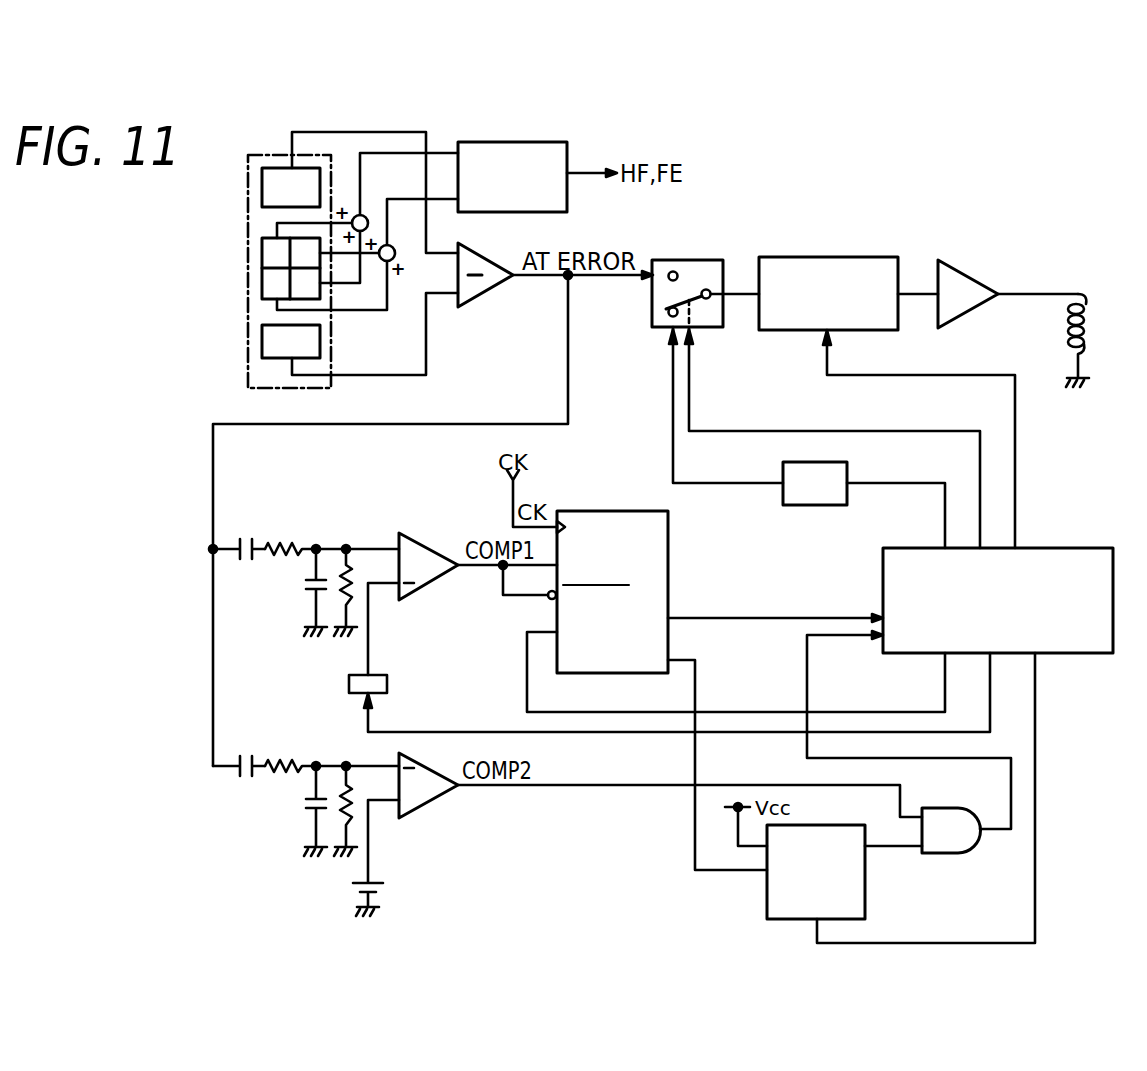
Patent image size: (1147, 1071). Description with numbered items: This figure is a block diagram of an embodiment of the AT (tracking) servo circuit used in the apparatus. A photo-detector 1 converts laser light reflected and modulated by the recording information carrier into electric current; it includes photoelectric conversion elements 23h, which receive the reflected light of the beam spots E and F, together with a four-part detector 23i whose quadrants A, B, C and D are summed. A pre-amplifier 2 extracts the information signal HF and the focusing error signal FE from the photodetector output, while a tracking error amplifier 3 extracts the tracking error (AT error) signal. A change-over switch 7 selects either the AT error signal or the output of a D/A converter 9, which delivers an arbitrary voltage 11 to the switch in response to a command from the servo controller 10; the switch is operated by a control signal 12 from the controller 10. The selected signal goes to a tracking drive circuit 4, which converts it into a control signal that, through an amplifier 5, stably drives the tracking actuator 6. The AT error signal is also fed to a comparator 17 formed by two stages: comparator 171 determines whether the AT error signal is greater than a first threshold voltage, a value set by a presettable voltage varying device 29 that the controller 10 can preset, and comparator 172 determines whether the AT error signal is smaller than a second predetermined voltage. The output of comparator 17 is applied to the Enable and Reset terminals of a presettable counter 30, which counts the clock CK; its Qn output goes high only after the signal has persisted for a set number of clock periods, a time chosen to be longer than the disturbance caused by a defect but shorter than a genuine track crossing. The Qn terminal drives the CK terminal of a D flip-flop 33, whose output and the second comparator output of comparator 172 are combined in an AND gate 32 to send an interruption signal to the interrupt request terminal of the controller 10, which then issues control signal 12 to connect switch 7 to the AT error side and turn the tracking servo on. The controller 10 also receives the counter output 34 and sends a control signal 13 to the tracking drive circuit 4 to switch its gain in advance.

The photo-detector 1 is at (256, 264).
The photoelectric conversion element 23h is at (262, 186).
The four-quadrant photodetector A B C D 23i is at (247, 236).
The pre-amplifier 2 is at (520, 142).
The tracking error amplifier 3 is at (492, 296).
The change-over switch 7 is at (693, 260).
The tracking drive circuit 4 is at (853, 257).
The amplifier 5 is at (964, 270).
The tracking actuator 6 is at (1086, 326).
The arbitrary voltage 11 is at (673, 369).
The control signal 12 is at (689, 369).
The control signal 13 is at (827, 364).
The D/A converter 9 is at (847, 477).
The servo controller 10 is at (1060, 548).
The comparator 17 is at (399, 685).
The comparator 171 is at (420, 538).
The comparator 172 is at (440, 806).
The presettable voltage varying device 29 is at (349, 684).
The presettable counter 30 is at (668, 563).
The output 34 is at (773, 618).
The AND gate 32 is at (945, 853).
The D flip-flop 33 is at (767, 893).